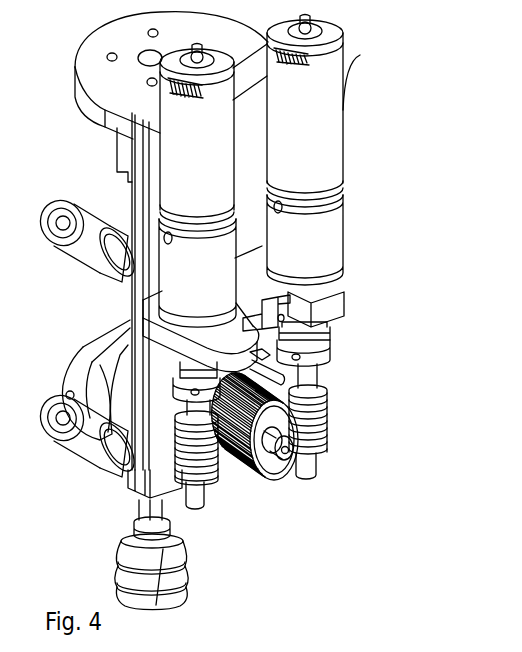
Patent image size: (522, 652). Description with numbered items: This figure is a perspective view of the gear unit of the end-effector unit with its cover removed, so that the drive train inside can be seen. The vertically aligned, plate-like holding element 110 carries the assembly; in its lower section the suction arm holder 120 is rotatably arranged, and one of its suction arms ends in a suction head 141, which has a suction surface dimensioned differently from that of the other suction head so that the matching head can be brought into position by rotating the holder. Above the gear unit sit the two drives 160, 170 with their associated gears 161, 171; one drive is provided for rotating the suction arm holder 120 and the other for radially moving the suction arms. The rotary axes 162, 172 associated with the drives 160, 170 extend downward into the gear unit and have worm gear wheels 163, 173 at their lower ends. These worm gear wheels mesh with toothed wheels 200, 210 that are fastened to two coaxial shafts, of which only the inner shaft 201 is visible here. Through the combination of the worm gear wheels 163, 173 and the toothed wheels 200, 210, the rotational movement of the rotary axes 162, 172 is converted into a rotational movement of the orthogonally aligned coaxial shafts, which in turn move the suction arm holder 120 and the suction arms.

The holding element 110 is at (137, 210).
The suction arm holder 120 is at (112, 488).
The suction head 141 is at (165, 556).
The drive 160 is at (303, 106).
The gear 161 is at (300, 235).
The rotary axis 162 is at (303, 383).
The worm gear wheel 163 is at (313, 435).
The drive 170 is at (198, 175).
The gear 171 is at (198, 266).
The rotary axis 172 is at (205, 500).
The worm gear wheel 173 is at (217, 467).
The toothed wheel 200 is at (300, 446).
The inner shaft 201 is at (292, 462).
The toothed wheel 210 is at (173, 392).